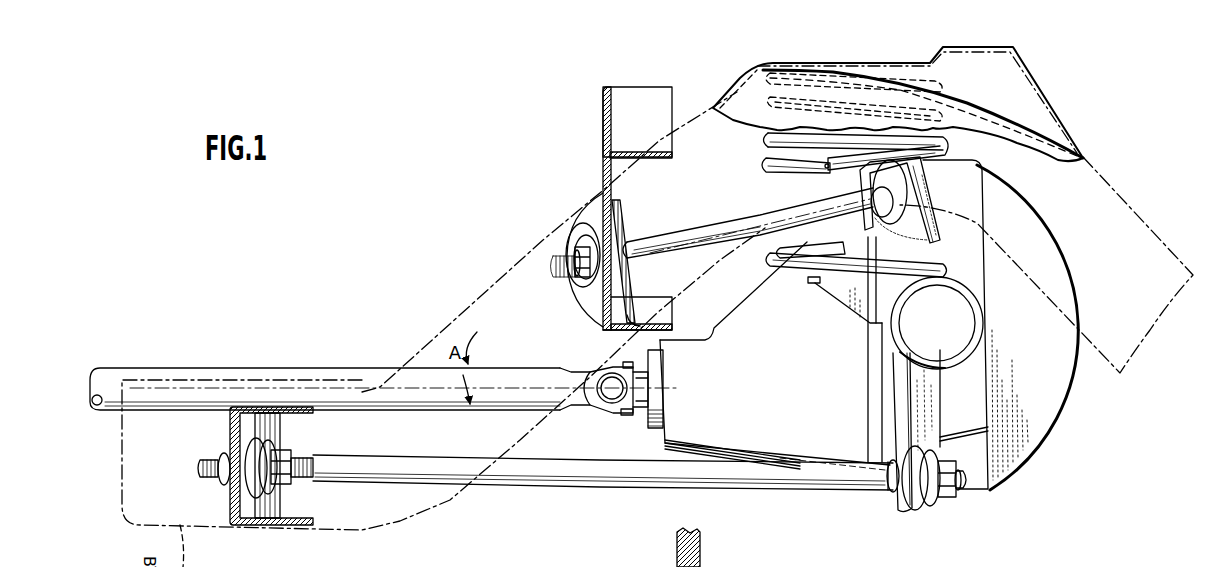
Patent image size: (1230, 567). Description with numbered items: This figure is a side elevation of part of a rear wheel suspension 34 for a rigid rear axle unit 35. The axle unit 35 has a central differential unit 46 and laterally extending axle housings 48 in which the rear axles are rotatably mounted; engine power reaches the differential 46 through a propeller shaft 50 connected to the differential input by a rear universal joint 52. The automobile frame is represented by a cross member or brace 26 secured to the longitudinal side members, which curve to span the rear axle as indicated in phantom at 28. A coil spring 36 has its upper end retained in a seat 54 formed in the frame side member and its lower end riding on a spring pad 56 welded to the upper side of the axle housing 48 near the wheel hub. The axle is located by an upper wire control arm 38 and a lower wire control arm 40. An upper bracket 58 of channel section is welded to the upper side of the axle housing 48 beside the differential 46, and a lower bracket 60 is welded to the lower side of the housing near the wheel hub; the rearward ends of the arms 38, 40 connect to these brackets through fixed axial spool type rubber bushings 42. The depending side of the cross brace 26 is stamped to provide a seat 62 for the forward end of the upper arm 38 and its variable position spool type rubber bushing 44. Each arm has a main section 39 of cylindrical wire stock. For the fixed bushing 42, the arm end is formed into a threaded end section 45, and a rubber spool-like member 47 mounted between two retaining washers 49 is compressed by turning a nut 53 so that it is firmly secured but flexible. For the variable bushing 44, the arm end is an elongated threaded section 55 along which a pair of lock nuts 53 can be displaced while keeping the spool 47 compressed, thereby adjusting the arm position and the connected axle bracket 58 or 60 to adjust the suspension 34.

The cross member or brace 26 is at (617, 124).
The curved portion of frame side member 28 is at (503, 296).
The rear wheel suspension 34 is at (795, 284).
The rear axle unit 35 is at (1064, 421).
The coil springs 36 is at (783, 166).
The upper wire control arms 38 is at (683, 236).
The main section of control arm 39 is at (707, 228).
The lower wire control arms 40 is at (566, 477).
The fixed axial spool type rubber bushing 42 is at (886, 177).
The variable position axial spool type rubber bushing 44 is at (283, 443).
The threaded end section 45 is at (966, 485).
The differential unit 46 is at (680, 424).
The rubber spool-like member 47 is at (252, 483).
The axle housing 48 is at (978, 334).
The retaining washers 49 is at (272, 490).
The propeller shaft 50 is at (336, 368).
The rear universal joint 52 is at (600, 410).
The nut 53 is at (226, 455).
The spring seat 54 is at (814, 70).
The elongated threaded end section 55 is at (300, 458).
The spring pads 56 is at (848, 297).
The upper brackets 58 is at (920, 194).
The lower brackets 60 is at (927, 421).
The seats for upper control arms 62 is at (593, 305).